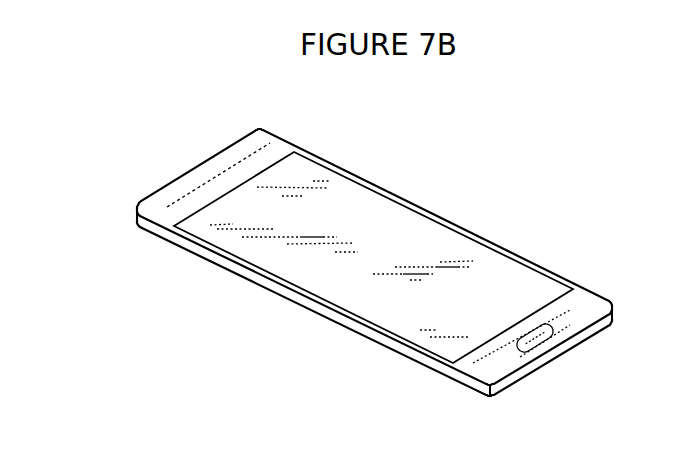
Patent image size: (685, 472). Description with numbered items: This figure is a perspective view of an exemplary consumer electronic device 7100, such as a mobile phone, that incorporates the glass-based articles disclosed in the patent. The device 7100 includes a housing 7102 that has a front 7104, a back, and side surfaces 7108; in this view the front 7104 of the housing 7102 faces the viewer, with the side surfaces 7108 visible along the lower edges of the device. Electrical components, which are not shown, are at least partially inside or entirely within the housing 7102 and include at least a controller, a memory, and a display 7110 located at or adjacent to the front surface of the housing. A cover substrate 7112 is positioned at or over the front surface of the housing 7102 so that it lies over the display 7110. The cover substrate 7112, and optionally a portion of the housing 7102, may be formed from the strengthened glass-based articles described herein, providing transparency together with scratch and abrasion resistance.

The consumer electronic device 7100 is at (176, 149).
The housing 7102 is at (285, 147).
The front surface 7104 is at (588, 310).
The side surfaces 7108 is at (218, 263).
The display 7110 is at (343, 203).
The cover substrate 7112 is at (400, 313).